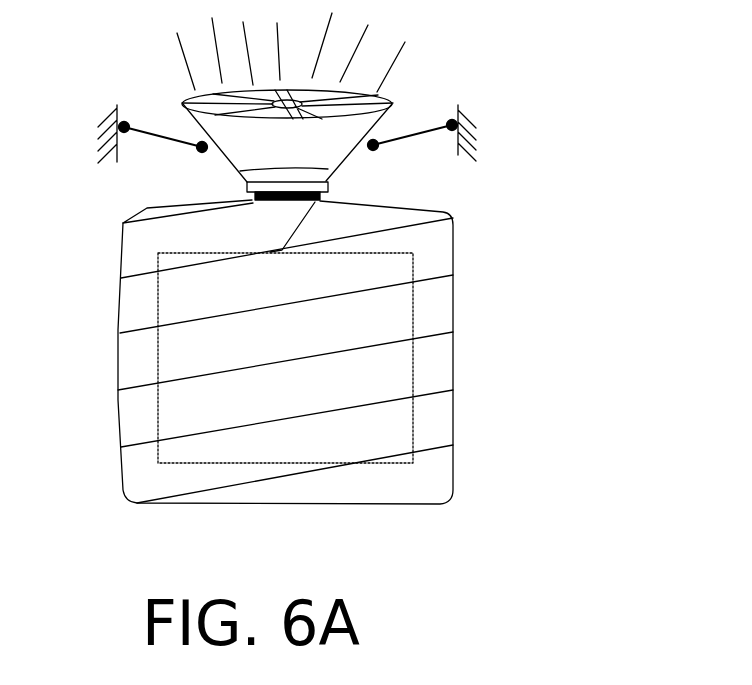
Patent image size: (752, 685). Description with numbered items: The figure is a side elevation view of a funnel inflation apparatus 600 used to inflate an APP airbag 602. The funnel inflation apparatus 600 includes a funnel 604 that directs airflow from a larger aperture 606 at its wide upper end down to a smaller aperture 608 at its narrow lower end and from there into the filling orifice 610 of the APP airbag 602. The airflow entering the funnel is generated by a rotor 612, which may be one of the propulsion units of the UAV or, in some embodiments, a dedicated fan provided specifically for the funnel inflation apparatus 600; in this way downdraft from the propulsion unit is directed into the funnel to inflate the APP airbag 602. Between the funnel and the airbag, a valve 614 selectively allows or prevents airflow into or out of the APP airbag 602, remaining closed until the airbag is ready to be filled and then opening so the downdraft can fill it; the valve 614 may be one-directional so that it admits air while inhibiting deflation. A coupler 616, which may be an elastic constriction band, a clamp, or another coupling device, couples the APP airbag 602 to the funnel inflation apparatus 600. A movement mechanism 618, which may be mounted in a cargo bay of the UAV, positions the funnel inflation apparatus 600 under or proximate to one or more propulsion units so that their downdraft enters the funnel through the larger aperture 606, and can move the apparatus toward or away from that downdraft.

The funnel inflation apparatus 600 is at (560, 68).
The APP airbag 602 is at (473, 225).
The funnel 604 is at (197, 143).
The larger aperture 606 is at (386, 101).
The smaller aperture 608 is at (325, 181).
The filling orifice 610 is at (248, 170).
The rotor 612 is at (215, 107).
The valve 614 is at (329, 187).
The coupler 616 is at (321, 197).
The movement mechanism 618 is at (134, 150).